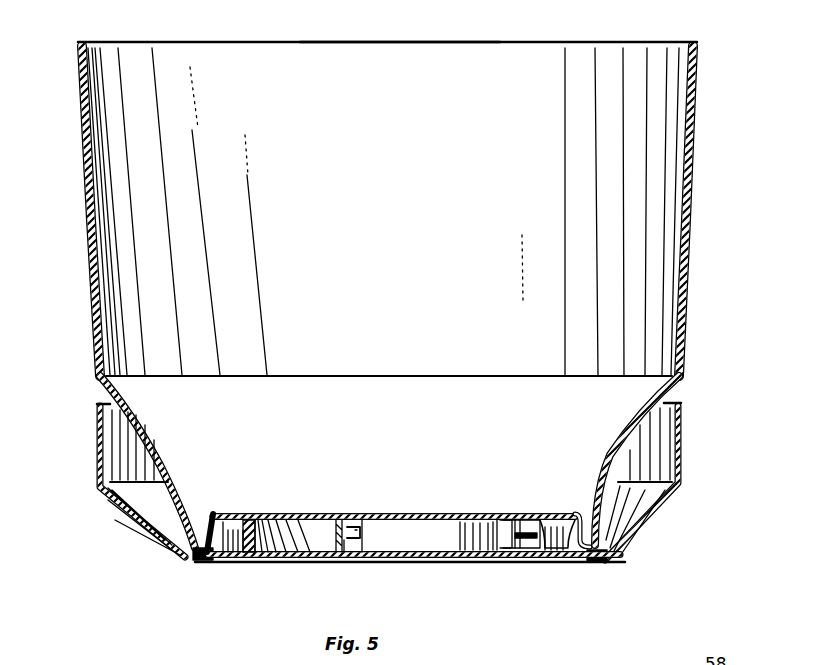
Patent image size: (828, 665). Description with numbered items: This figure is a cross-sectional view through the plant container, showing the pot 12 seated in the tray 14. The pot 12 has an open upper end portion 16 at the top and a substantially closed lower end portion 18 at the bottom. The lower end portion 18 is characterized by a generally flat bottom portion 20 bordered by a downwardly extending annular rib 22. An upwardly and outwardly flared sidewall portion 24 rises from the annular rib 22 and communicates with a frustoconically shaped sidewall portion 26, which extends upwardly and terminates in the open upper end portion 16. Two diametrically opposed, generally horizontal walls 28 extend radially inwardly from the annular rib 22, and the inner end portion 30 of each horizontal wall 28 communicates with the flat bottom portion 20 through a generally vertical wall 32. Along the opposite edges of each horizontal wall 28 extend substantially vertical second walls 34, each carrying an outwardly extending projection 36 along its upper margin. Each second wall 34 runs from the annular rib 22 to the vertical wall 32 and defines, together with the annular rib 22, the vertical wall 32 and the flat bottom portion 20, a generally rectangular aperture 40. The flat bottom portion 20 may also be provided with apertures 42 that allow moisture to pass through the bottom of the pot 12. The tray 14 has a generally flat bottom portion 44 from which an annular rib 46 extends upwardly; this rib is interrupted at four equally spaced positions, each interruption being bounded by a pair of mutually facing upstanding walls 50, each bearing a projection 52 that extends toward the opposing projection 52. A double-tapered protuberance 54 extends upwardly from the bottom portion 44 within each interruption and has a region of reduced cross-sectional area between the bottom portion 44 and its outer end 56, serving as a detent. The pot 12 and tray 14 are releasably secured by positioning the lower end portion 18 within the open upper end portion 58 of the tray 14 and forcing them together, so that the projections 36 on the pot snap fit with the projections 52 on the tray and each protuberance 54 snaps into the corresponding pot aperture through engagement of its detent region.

The pot 12 is at (77, 97).
The tray 14 is at (100, 448).
The open upper end portion 16 is at (497, 40).
The substantially closed lower end portion 18 is at (413, 508).
The generally flat bottom portion 20 is at (393, 514).
The downwardly extending annular rib 22 is at (195, 560).
The upwardly and outwardly flared sidewall portion 24 is at (632, 455).
The frustoconically shaped sidewall portion 26 is at (695, 170).
The generally horizontal wall 28 is at (520, 550).
The inner end portion 30 is at (505, 545).
The generally vertical wall 32 is at (500, 540).
The substantially vertical second wall 34 is at (522, 556).
The outwardly extending projection 36 is at (545, 520).
The aperture 40 is at (520, 524).
The aperture 42 is at (260, 515).
The generally flat bottom portion 44 is at (455, 540).
The annular rib 46 is at (258, 540).
The upstanding wall 50 is at (365, 545).
The projection 52 is at (357, 525).
The double-tapered protuberance 54 is at (345, 545).
The outer end 56 is at (343, 520).
The open upper end portion 58 is at (680, 403).